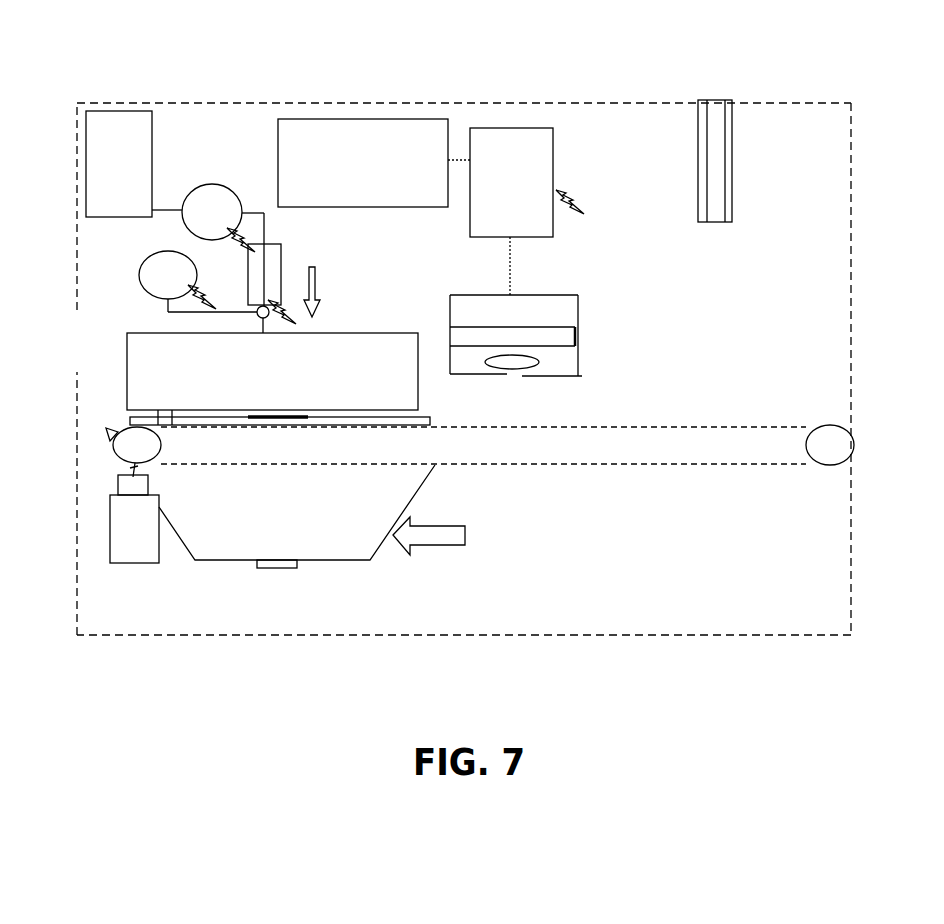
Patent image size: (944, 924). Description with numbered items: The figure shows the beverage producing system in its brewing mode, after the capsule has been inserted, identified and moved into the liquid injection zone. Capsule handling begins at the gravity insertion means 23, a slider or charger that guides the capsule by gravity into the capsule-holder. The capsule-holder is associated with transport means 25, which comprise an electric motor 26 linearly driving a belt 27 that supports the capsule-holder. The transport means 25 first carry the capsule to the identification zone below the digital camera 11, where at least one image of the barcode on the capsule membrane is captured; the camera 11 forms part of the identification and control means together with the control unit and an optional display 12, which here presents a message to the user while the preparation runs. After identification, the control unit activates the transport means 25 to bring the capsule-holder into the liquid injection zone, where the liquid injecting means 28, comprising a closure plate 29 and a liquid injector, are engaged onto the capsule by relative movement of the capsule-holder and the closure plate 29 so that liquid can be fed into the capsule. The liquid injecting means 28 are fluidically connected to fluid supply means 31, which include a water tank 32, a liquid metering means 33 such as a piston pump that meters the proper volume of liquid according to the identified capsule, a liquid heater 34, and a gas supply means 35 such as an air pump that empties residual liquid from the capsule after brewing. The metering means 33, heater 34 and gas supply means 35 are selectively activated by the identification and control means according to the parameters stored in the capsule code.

The fluid supply means 31 is at (207, 124).
The water tank 32 is at (146, 158).
The liquid metering means 33 is at (217, 192).
The liquid heater 34 is at (274, 264).
The gas supply means 35 is at (145, 270).
The display 12 is at (378, 207).
The digital camera 11 is at (586, 297).
The gravity insertion means 23 is at (727, 183).
The closure plate 29 is at (347, 327).
The liquid injecting means 28 is at (101, 351).
The transport means 25 is at (548, 472).
The belt 27 is at (494, 463).
The electric motor 26 is at (150, 542).